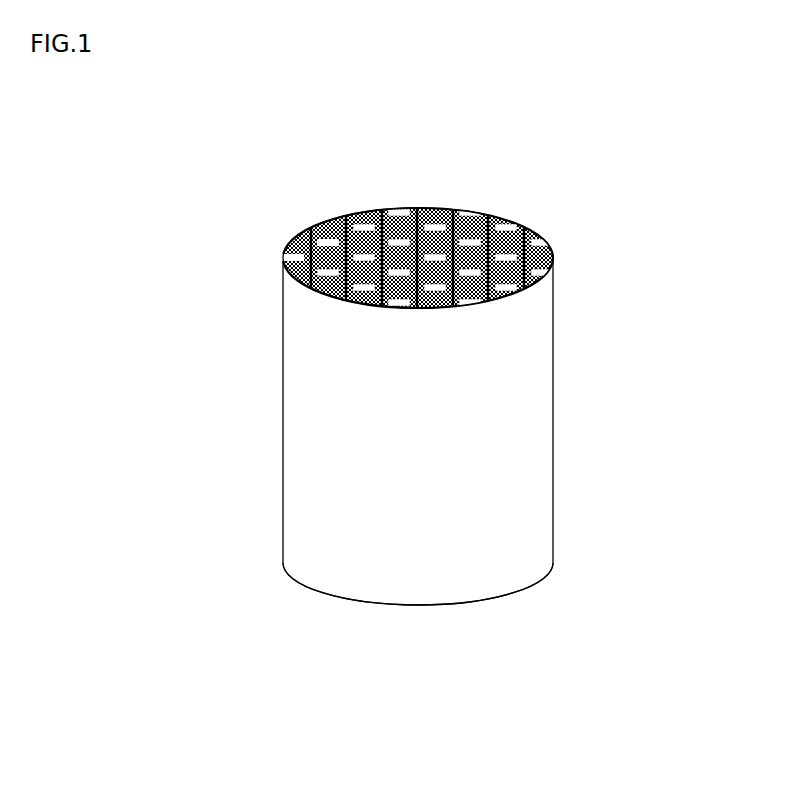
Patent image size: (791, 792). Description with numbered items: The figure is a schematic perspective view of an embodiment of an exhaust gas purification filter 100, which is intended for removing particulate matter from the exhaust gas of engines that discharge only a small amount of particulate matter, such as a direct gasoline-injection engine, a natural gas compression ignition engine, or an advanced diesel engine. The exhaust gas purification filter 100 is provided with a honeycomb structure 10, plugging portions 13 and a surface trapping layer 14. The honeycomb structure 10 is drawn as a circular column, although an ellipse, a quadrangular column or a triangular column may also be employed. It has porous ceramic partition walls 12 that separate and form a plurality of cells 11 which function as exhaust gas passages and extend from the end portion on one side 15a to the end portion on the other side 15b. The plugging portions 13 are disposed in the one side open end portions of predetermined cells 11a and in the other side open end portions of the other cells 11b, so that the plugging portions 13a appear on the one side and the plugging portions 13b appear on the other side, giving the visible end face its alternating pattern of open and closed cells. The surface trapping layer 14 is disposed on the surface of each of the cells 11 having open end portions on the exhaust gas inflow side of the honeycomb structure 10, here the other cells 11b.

The exhaust gas purification filter 100 is at (728, 121).
The honeycomb structure 10 is at (553, 457).
The cell 11 is at (336, 233).
The cell 11a is at (303, 232).
The cell 11b is at (288, 245).
The partition wall 12 is at (468, 213).
The plugging portion 13 is at (497, 367).
The plugging portion 13a is at (403, 207).
The plugging portion 13b is at (520, 588).
The surface trapping layer 14 is at (557, 262).
The end portion on one side 15a is at (370, 206).
The end portion on the other side 15b is at (371, 607).